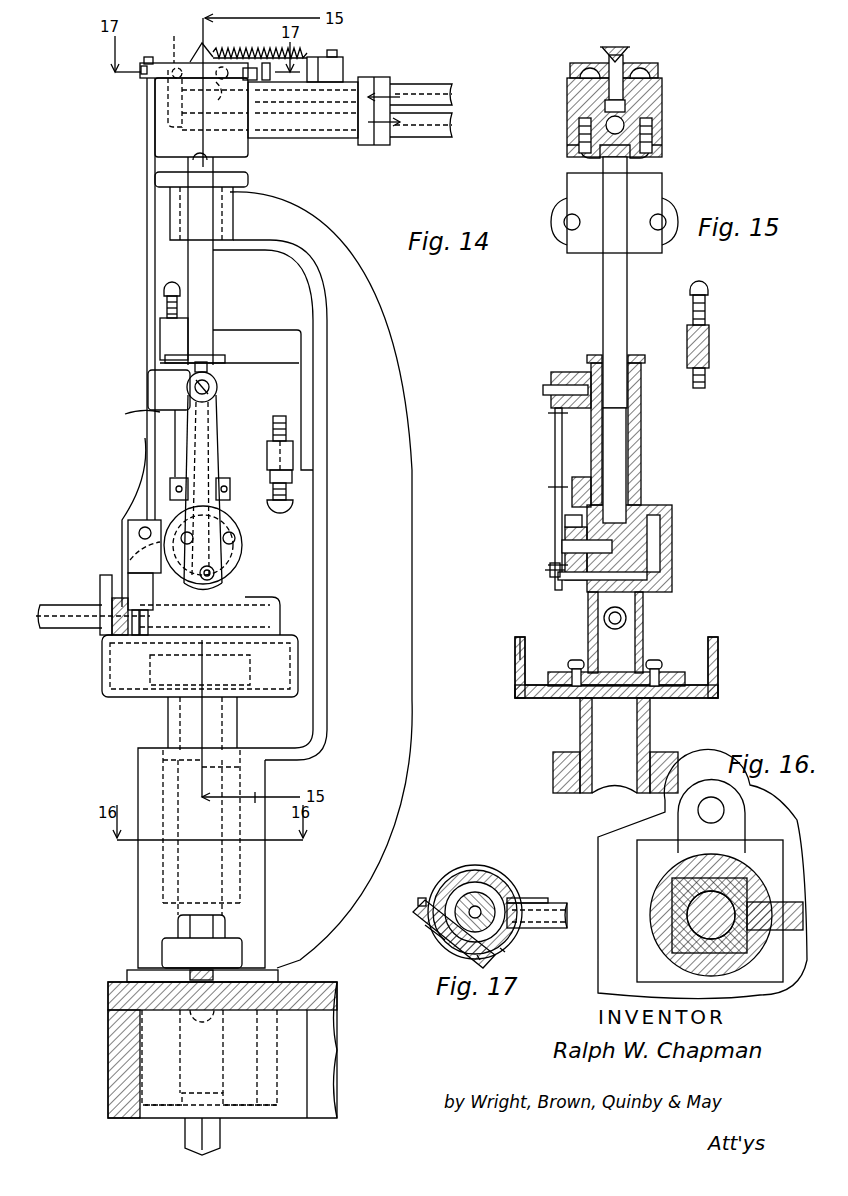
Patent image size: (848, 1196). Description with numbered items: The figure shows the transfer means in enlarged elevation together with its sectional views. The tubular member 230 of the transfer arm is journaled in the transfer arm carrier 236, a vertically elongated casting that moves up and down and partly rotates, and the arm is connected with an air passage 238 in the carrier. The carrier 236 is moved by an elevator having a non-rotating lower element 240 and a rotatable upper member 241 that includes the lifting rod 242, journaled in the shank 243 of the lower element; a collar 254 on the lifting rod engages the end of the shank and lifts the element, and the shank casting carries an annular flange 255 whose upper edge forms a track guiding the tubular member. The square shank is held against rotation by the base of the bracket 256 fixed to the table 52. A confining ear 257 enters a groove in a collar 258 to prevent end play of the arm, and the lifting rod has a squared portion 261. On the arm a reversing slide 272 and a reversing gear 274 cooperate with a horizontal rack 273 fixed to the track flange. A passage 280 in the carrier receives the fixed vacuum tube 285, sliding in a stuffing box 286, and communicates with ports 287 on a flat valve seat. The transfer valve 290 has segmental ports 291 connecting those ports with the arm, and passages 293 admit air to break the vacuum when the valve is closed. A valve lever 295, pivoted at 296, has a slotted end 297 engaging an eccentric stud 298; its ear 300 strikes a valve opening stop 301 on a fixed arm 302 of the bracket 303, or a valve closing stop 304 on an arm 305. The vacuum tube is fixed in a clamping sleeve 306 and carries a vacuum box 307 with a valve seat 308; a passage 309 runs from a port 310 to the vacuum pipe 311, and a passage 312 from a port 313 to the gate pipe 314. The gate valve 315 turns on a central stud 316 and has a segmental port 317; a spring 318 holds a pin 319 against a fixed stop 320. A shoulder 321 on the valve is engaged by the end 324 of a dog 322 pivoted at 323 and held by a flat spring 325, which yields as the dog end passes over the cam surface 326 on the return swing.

In FIG. 14, the table 52 is at (300, 990).
In FIG. 16, the table 52 is at (610, 945).
In FIG. 14, the tubular member 230 is at (66, 602).
In FIG. 15, the tubular member 230 is at (604, 616).
In FIG. 15, the transfer arm carrier 236 is at (643, 614).
In FIG. 15, the air passage 238 is at (617, 645).
In FIG. 14, the lower element 240 is at (104, 682).
In FIG. 15, the lower element 240 is at (518, 685).
In FIG. 15, the upper member 241 is at (652, 672).
In FIG. 15, the lifting rod 242 is at (625, 735).
In FIG. 16, the lifting rod 242 is at (740, 890).
In FIG. 14, the shank 243 is at (168, 722).
In FIG. 15, the shank 243 is at (580, 714).
In FIG. 16, the shank 243 is at (680, 935).
In FIG. 14, the collar 254 is at (235, 922).
In FIG. 16, the collar 254 is at (652, 920).
In FIG. 15, the annular flange 255 is at (519, 637).
In FIG. 14, the bracket 256 is at (395, 412).
In FIG. 15, the bracket 256 is at (553, 775).
In FIG. 16, the bracket 256 is at (655, 870).
In FIG. 14, the confining ear 257 is at (128, 588).
In FIG. 14, the collar 258 is at (135, 640).
In FIG. 14, the squared portion 261 is at (215, 1138).
In FIG. 14, the reversing slide 272 is at (102, 580).
In FIG. 14, the horizontal rack 273 is at (120, 662).
In FIG. 14, the reversing gear 274 is at (118, 636).
In FIG. 15, the passage 280 is at (620, 470).
In FIG. 14, the vacuum tube 285 is at (206, 290).
In FIG. 15, the vacuum tube 285 is at (612, 326).
In FIG. 14, the stuffing box 286 is at (206, 372).
In FIG. 15, the stuffing box 286 is at (638, 372).
In FIG. 15, the ports 287 is at (612, 518).
In FIG. 15, the transfer valve 290 is at (562, 547).
In FIG. 15, the segmental ports 291 is at (565, 521).
In FIG. 14, the passages 293 is at (232, 548).
In FIG. 14, the valve lever 295 is at (207, 440).
In FIG. 15, the valve lever 295 is at (555, 453).
In FIG. 14, the pivot 296 is at (212, 380).
In FIG. 15, the pivot 296 is at (545, 392).
In FIG. 14, the slotted swinging end 297 is at (200, 582).
In FIG. 14, the eccentric stud 298 is at (214, 572).
In FIG. 15, the eccentric stud 298 is at (550, 570).
In FIG. 14, the ear 300 is at (152, 416).
In FIG. 14, the valve opening stop 301 is at (170, 366).
In FIG. 14, the fixed arm 302 is at (168, 342).
In FIG. 14, the bracket 303 is at (278, 338).
In FIG. 14, the valve closing stop 304 is at (288, 420).
In FIG. 14, the arm 305 is at (268, 448).
In FIG. 14, the clamping sleeve 306 is at (210, 212).
In FIG. 14, the vacuum box 307 is at (158, 136).
In FIG. 15, the vacuum box 307 is at (585, 120).
In FIG. 14, the valve seat 308 is at (165, 75).
In FIG. 15, the valve seat 308 is at (575, 88).
In FIG. 14, the passage 309 is at (360, 142).
In FIG. 15, the passage 309 is at (624, 122).
In FIG. 14, the port 310 is at (174, 60).
In FIG. 17, the port 310 is at (430, 924).
In FIG. 14, the vacuum pipe 311 is at (446, 120).
In FIG. 14, the passage 312 is at (352, 92).
In FIG. 14, the port 313 is at (263, 54).
In FIG. 17, the port 313 is at (480, 958).
In FIG. 14, the gate pipe 314 is at (440, 94).
In FIG. 15, the gate valve 315 is at (630, 58).
In FIG. 17, the gate valve 315 is at (505, 950).
In FIG. 15, the central stud 316 is at (592, 98).
In FIG. 17, the central stud 316 is at (490, 900).
In FIG. 15, the segmental port 317 is at (640, 92).
In FIG. 17, the segmental port 317 is at (490, 888).
In FIG. 14, the spring 318 is at (310, 58).
In FIG. 14, the pin 319 is at (250, 80).
In FIG. 17, the pin 319 is at (540, 900).
In FIG. 14, the fixed stop 320 is at (268, 78).
In FIG. 17, the fixed stop 320 is at (548, 928).
In FIG. 14, the shoulder 321 is at (165, 66).
In FIG. 17, the shoulder 321 is at (418, 905).
In FIG. 14, the dog 322 is at (149, 246).
In FIG. 14, the pivot 323 is at (140, 524).
In FIG. 14, the dog end 324 is at (140, 70).
In FIG. 17, the dog end 324 is at (440, 895).
In FIG. 14, the flat spring 325 is at (138, 478).
In FIG. 17, the cam surface 326 is at (430, 936).